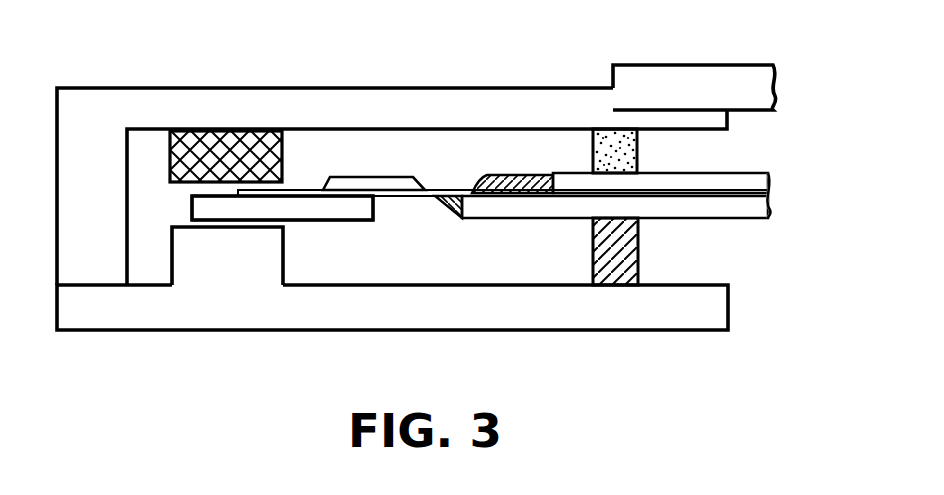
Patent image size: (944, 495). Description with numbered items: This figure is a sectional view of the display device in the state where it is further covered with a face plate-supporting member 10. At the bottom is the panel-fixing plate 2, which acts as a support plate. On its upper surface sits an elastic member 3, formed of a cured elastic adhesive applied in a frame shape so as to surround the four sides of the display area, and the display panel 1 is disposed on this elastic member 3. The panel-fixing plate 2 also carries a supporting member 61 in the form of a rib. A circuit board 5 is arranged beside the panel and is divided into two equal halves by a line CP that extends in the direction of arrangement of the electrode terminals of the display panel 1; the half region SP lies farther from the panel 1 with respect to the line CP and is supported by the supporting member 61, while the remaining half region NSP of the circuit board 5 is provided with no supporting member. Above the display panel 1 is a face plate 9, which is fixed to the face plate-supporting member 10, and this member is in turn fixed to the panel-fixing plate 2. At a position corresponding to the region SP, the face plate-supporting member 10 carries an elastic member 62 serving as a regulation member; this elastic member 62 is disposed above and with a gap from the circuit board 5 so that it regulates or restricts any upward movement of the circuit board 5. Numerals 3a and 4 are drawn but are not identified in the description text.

The display panel 1 is at (782, 173).
The panel-fixing plate 2 is at (522, 306).
The elastic member 3 is at (615, 257).
The adhesive layer 3a is at (617, 153).
The electrode 4 is at (398, 178).
The circuit board 5 is at (215, 210).
The face plate 9 is at (693, 85).
The face plate-supporting member 10 is at (523, 97).
The supporting member 61 is at (213, 243).
The elastic member 62 is at (236, 155).
The line CP is at (288, 212).
The half region SP is at (192, 232).
The half region NSP is at (292, 226).